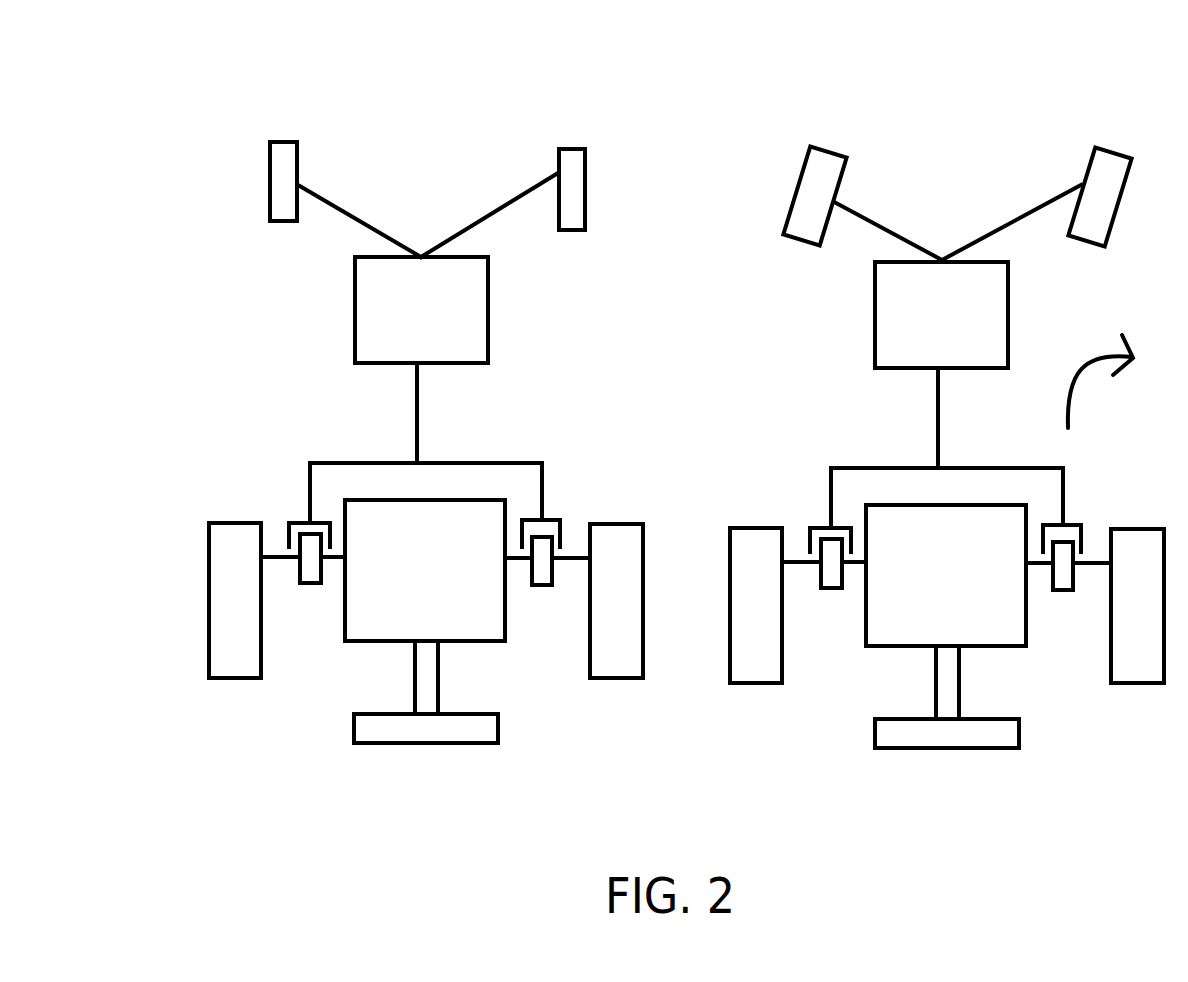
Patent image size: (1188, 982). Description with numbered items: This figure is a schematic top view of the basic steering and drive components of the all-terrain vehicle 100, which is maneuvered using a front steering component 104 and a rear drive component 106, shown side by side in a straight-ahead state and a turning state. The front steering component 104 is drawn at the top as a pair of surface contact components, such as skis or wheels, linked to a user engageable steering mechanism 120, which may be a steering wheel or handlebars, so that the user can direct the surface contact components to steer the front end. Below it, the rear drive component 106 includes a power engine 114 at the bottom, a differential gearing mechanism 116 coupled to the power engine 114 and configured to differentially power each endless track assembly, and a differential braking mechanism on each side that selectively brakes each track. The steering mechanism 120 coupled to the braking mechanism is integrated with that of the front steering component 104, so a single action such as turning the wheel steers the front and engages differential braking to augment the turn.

The all-terrain vehicle 100 is at (739, 35).
The front steering component 104 is at (401, 225).
The rear drive component 106 is at (405, 575).
The power engine 114 is at (379, 723).
The differential gearing mechanism 116 is at (400, 587).
The user engageable steering mechanism 120 is at (375, 310).